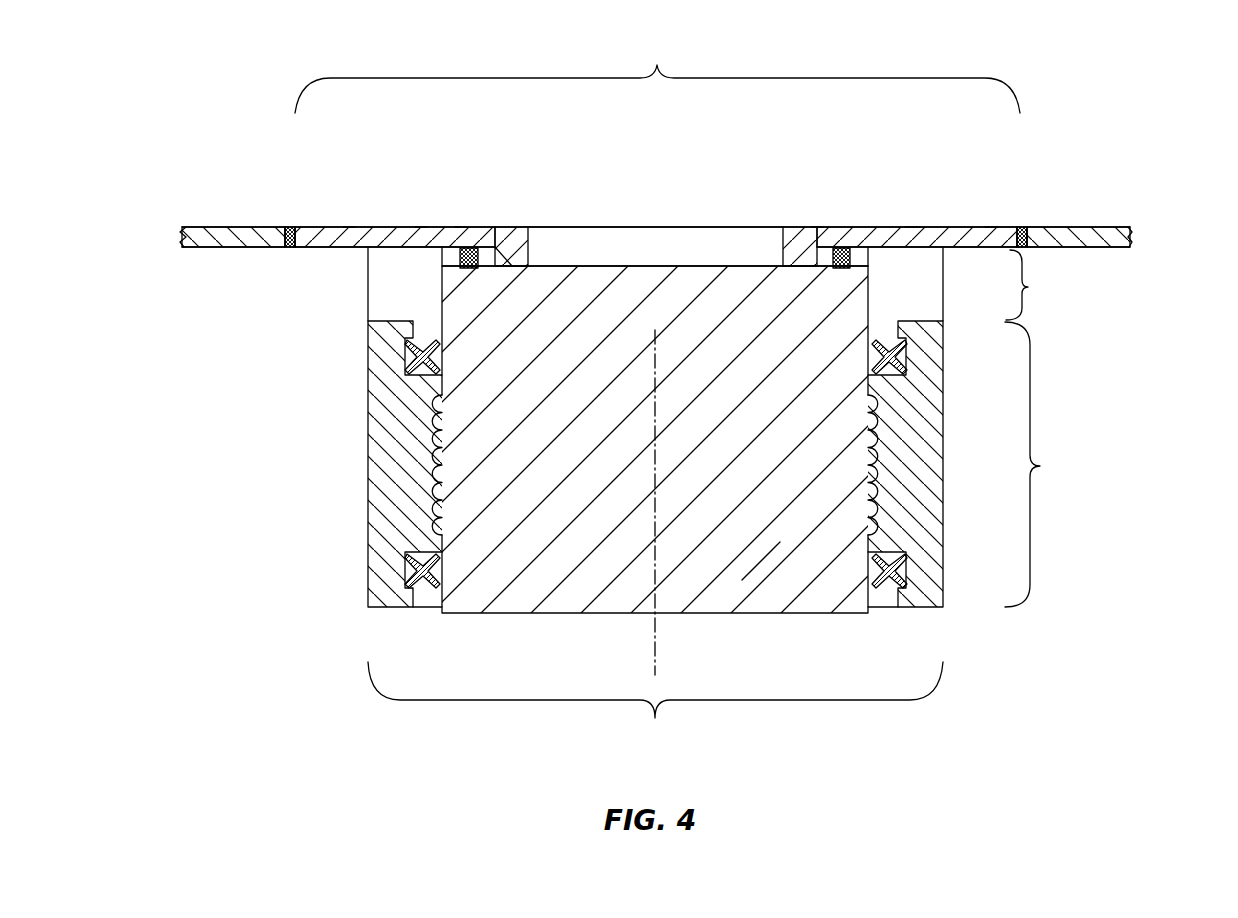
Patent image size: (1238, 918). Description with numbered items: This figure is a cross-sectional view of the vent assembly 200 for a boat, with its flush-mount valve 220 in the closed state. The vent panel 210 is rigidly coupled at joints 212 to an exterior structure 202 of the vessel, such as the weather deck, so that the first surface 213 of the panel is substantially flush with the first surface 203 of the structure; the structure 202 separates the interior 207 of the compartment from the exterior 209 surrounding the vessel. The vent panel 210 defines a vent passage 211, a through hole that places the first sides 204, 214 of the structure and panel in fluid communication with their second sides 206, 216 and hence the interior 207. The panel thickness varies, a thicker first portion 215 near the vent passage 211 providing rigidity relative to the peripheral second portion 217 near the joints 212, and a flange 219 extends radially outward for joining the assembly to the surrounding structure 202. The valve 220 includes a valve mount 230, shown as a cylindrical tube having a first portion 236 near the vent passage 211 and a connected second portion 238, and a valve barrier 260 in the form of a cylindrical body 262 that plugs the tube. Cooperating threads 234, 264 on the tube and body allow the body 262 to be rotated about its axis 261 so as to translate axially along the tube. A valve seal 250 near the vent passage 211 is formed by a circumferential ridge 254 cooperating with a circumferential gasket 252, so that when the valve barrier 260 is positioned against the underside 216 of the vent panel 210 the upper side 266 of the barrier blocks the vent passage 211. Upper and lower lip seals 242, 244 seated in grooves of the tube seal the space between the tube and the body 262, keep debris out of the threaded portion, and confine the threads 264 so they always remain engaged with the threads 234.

The vent assembly 200 is at (657, 76).
The exterior structure 202 is at (226, 226).
The first surface of exterior structure 203 is at (182, 236).
The first side of structure 204 is at (238, 224).
The second side of structure 206 is at (232, 252).
The interior of compartment 207 is at (252, 468).
The exterior 209 is at (214, 103).
The vent panel 210 is at (499, 226).
The vent passage 211 is at (634, 237).
The joints 212 is at (289, 226).
The first surface of vent panel 213 is at (460, 226).
The first side of vent panel 214 is at (912, 224).
The first portion of vent panel 215 is at (785, 226).
The second side of vent panel 216 is at (421, 226).
The second portion of vent panel 217 is at (992, 226).
The flange 219 is at (349, 226).
The flush-mount valve 220 is at (655, 704).
The valve mount 230 is at (710, 265).
The threads of tube 234 is at (723, 450).
The first portion of tube 236 is at (1034, 285).
The second portion of tube 238 is at (1041, 464).
The upper lip seal 242 is at (410, 356).
The lower lip seal 244 is at (410, 572).
The valve seal 250 is at (456, 276).
The circumferential gasket 252 is at (851, 262).
The circumferential ridge 254 is at (817, 226).
The valve barrier 260 is at (498, 622).
The axis 261 is at (657, 653).
The cylindrical body 262 is at (742, 580).
The threads of body 264 is at (878, 460).
The upper side of valve barrier 266 is at (655, 260).